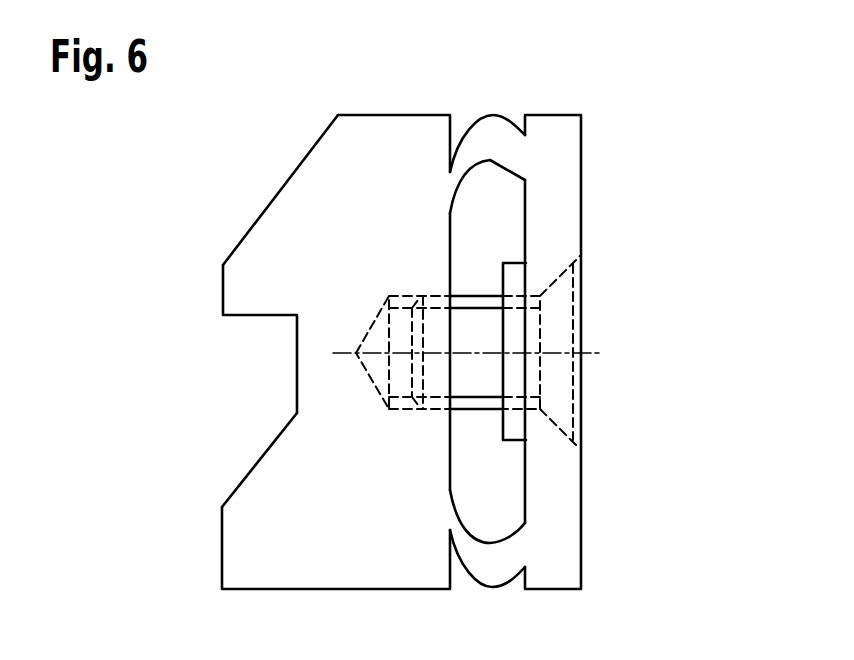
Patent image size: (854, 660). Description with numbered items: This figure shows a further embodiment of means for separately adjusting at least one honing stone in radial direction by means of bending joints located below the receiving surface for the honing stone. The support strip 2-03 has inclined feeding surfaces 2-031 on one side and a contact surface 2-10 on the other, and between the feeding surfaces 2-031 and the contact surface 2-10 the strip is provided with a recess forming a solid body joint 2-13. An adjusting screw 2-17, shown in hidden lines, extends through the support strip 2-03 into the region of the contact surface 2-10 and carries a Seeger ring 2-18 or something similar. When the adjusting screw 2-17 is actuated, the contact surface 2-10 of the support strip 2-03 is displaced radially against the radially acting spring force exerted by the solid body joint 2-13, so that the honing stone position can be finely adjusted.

The support strip 2-03 is at (272, 557).
The feeding surfaces 2-031 is at (250, 230).
The contact surface 2-10 is at (581, 482).
The solid body joint 2-13 is at (492, 143).
The adjusting screw 2-17 is at (558, 382).
The Seeger ring 2-18 is at (515, 275).